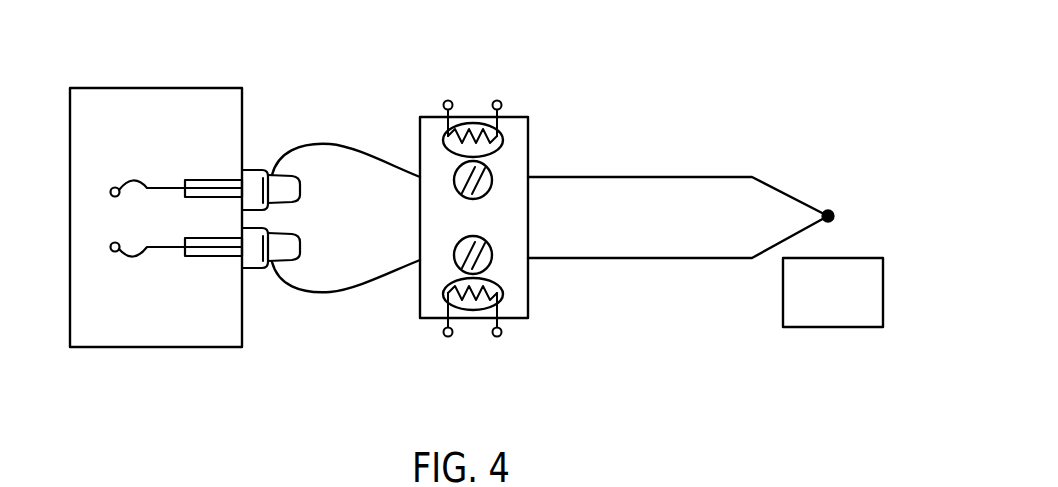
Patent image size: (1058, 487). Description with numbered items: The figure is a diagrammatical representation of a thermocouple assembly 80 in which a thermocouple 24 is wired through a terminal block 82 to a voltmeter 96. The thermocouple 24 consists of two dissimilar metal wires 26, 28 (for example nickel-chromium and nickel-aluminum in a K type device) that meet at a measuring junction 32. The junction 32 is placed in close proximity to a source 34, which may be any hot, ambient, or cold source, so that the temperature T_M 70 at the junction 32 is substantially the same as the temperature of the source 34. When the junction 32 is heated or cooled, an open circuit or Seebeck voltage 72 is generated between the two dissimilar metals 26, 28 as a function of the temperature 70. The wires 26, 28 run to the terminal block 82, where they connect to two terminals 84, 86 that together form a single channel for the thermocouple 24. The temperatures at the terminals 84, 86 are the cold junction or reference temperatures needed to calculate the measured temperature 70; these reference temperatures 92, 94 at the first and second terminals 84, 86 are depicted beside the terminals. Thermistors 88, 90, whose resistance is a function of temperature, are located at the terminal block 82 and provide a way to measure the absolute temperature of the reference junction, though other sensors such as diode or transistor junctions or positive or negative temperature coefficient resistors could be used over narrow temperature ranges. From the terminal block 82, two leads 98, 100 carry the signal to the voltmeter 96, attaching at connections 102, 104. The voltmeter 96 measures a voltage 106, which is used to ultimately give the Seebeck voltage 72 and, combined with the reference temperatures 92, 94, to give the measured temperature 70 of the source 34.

The thermocouple 24 is at (715, 194).
The dissimilar metal 26 is at (677, 177).
The dissimilar metal 28 is at (677, 258).
The junction 32 is at (828, 210).
The source 34 is at (833, 327).
The temperature T_M 70 is at (868, 200).
The open circuit voltage 72 is at (713, 222).
The thermocouple assembly 80 is at (576, 178).
The terminal block 82 is at (542, 122).
The terminal 84 is at (455, 181).
The terminal 86 is at (455, 254).
The thermistor 88 is at (472, 122).
The thermistor 90 is at (471, 310).
The temperature 92 is at (497, 173).
The temperature 94 is at (499, 275).
The voltmeter 96 is at (90, 288).
The lead 98 is at (350, 146).
The lead 100 is at (351, 288).
The connection 102 is at (272, 172).
The connection 104 is at (272, 268).
The voltage 106 is at (88, 220).